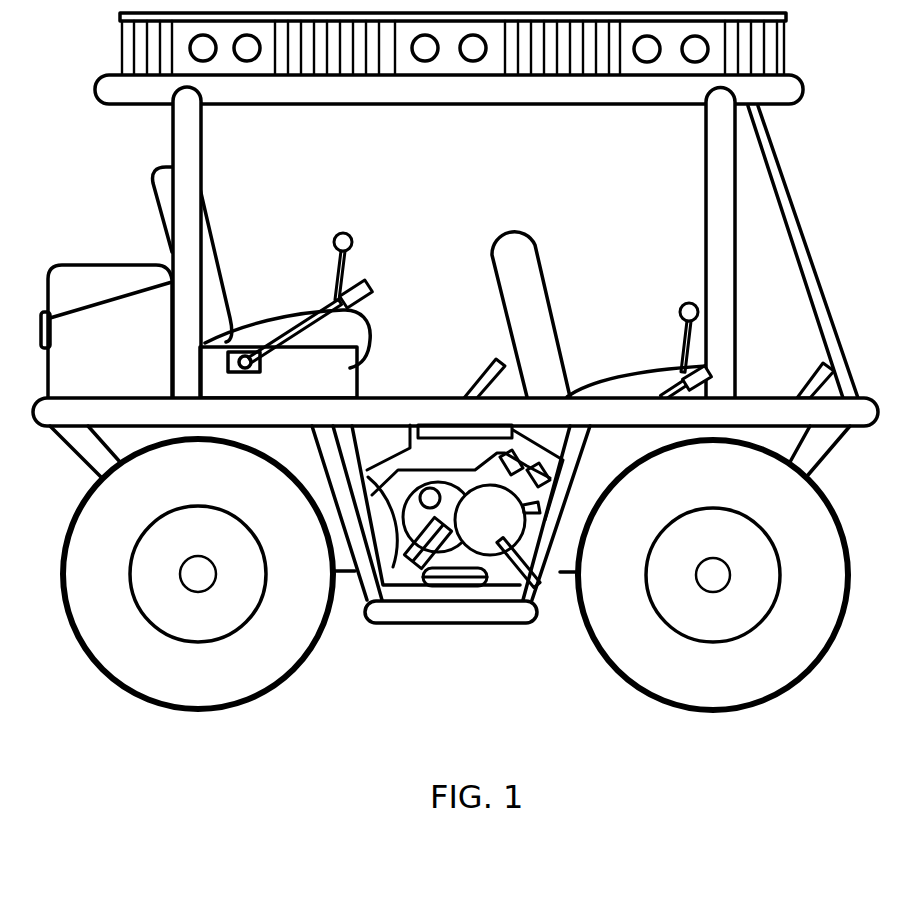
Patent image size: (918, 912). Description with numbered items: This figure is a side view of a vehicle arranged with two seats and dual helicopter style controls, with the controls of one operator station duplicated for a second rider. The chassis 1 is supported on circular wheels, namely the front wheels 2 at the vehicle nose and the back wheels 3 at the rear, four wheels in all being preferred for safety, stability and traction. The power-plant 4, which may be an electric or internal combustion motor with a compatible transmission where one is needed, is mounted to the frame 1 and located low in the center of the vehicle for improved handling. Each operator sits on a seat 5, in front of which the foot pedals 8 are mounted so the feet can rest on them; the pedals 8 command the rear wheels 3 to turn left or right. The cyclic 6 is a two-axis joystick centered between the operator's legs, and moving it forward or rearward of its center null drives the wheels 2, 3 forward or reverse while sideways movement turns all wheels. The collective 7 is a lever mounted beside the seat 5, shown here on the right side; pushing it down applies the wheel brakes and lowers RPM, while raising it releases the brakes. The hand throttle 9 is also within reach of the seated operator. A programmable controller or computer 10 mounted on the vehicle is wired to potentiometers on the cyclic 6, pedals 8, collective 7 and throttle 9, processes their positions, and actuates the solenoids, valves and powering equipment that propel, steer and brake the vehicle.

The chassis 1 is at (100, 460).
The front wheels 2 is at (793, 683).
The back wheels 3 is at (123, 687).
The power-plant 4 is at (489, 522).
The seat 5 is at (253, 327).
The cyclic 6 is at (346, 233).
The collective 7 is at (310, 320).
The foot pedals 8 is at (480, 377).
The hand throttle 9 is at (373, 282).
The programmable controller or computer 10 is at (96, 265).